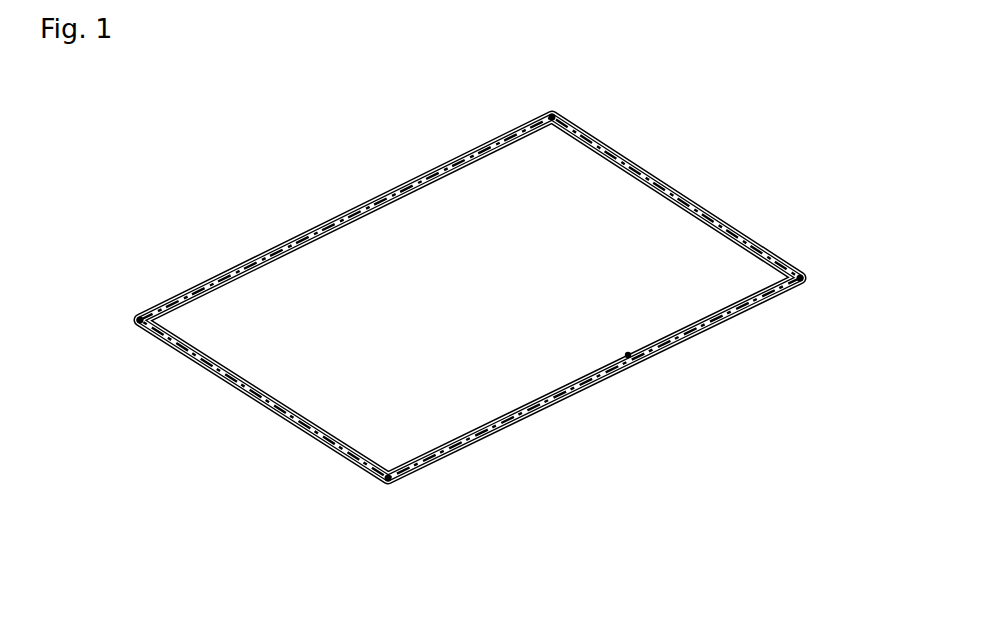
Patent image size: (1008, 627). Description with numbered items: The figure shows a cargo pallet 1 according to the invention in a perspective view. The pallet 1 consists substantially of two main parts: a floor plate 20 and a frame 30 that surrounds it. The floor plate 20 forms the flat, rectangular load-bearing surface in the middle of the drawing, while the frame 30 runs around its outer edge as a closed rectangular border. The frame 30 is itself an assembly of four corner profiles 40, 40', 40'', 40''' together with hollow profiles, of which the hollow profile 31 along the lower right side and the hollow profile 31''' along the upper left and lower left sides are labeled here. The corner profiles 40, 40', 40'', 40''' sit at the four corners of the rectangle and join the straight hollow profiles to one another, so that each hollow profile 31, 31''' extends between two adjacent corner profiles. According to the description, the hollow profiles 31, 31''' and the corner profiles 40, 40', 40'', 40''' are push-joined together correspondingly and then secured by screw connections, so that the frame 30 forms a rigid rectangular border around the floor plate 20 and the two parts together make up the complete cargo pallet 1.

The cargo pallet 1 is at (228, 220).
The floor plate 20 is at (318, 380).
The frame 30 is at (316, 450).
The hollow profile 31 is at (613, 440).
The hollow profile 31''' is at (339, 227).
The corner profile 40 is at (828, 352).
The corner profile 40' is at (673, 100).
The corner profile 40'' is at (94, 288).
The corner profile 40''' is at (460, 541).